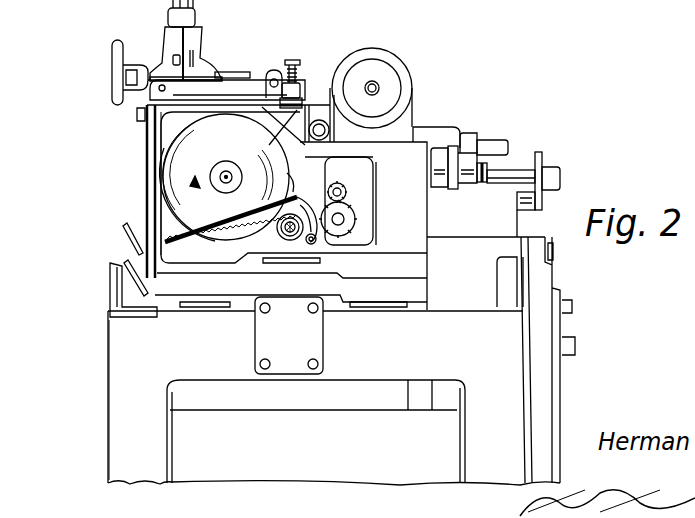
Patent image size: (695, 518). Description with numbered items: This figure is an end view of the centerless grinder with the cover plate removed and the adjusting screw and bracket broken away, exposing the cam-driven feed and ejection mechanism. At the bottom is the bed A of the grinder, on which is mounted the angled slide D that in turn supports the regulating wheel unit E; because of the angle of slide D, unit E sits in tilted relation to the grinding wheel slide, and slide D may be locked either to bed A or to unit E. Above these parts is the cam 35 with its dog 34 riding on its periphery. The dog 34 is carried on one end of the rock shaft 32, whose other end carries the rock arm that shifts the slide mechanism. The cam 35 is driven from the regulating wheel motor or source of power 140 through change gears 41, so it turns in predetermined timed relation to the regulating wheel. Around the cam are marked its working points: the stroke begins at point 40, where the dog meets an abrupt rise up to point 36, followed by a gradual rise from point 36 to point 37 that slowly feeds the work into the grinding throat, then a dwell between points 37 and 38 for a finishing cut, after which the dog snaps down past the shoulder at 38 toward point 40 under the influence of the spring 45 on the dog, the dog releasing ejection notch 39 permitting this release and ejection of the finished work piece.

The cam 35 is at (237, 118).
The dog releasing ejection notch 39 is at (308, 103).
The regulating wheel motor or source of power 140 is at (410, 70).
The change gears 41 is at (347, 187).
The dog 34 is at (352, 210).
The rock shaft 32 is at (320, 241).
The cam point 37 is at (190, 117).
The cam point 38 is at (238, 120).
The cam point 40 is at (271, 180).
The cam point 36 is at (244, 180).
The spring 45 is at (167, 220).
The regulating wheel unit E is at (157, 145).
The angled slide D is at (115, 308).
The bed A is at (132, 398).